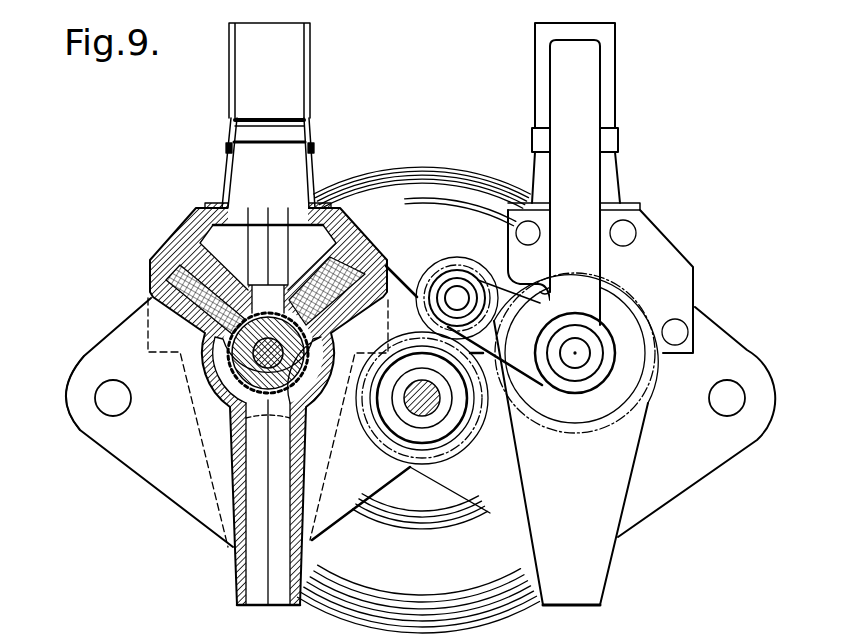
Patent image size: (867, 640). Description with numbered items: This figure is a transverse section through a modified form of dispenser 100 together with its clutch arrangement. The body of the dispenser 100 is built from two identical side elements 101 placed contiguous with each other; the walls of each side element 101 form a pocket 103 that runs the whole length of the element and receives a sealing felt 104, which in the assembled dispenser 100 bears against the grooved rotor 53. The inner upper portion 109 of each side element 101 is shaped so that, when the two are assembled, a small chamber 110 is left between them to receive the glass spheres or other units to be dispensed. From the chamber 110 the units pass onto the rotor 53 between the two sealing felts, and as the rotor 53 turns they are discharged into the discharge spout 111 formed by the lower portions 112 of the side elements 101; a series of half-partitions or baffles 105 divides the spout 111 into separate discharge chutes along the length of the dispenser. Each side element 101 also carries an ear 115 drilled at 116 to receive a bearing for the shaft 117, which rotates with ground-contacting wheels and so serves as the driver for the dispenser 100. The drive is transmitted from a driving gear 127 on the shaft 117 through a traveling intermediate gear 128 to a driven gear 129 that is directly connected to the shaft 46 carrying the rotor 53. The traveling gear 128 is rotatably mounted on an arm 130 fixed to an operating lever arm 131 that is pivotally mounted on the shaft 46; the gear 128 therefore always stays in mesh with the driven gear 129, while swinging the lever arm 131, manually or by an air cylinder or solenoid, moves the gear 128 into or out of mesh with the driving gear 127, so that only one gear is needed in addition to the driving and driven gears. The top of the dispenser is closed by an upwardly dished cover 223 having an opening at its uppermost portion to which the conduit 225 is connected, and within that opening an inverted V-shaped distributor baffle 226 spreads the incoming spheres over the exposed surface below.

The conduit 225 is at (296, 52).
The inverted V-shaped distributor baffle 226 is at (270, 128).
The upwardly dished cover 223 is at (307, 177).
The sealing felt 104 is at (197, 215).
The pocket 103 is at (176, 240).
The small chamber 110 is at (307, 257).
The inner upper portion 109 is at (300, 292).
The traveling intermediate gear 128 is at (455, 256).
The arm 130 is at (518, 313).
The operating lever arm 131 is at (582, 183).
The driven gear 129 is at (623, 283).
The shaft 46 is at (575, 353).
The dispenser 100 is at (222, 408).
The bore 116 is at (100, 384).
The ear 115 is at (77, 392).
The rotor 53 is at (242, 347).
The side element 101 is at (233, 462).
The lower portion 112 is at (235, 507).
The discharge spout 111 is at (260, 518).
The half-partitions or baffles 105 is at (255, 603).
The shaft 117 is at (417, 403).
The driving gear 127 is at (470, 436).